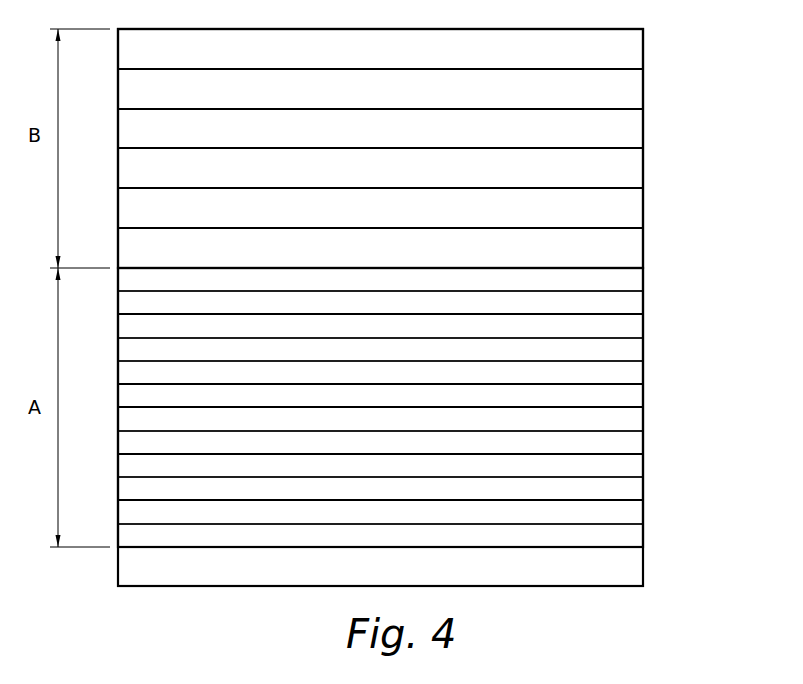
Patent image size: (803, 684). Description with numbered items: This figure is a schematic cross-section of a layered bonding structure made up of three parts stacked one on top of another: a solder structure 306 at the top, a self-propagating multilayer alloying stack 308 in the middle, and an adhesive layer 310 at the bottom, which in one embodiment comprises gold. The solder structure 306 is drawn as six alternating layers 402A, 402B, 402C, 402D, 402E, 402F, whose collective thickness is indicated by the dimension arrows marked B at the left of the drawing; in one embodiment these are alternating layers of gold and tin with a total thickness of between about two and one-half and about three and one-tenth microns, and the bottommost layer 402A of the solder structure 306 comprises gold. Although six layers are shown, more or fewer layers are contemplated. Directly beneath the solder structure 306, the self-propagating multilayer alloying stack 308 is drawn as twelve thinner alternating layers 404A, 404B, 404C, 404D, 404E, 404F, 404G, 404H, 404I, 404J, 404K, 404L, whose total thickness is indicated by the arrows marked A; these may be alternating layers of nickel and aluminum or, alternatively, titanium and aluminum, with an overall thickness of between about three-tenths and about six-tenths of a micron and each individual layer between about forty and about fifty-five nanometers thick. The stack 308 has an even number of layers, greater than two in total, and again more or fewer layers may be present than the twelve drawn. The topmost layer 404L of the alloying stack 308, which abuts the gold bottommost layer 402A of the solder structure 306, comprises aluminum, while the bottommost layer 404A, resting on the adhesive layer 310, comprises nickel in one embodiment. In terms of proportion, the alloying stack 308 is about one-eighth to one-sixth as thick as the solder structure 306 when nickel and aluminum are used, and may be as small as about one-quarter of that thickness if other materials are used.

The bottommost layer of solder structure 402A is at (633, 249).
The alternating layer of solder structure 402B is at (633, 209).
The alternating layer of solder structure 402C is at (633, 169).
The alternating layer of solder structure 402D is at (633, 129).
The alternating layer of solder structure 402E is at (633, 90).
The alternating layer of solder structure 402F is at (633, 50).
The bottommost layer of self-propagating multilayer alloying stack 404A is at (633, 537).
The alternating layer of alloying stack 404B is at (633, 514).
The alternating layer of alloying stack 404C is at (633, 490).
The alternating layer of alloying stack 404D is at (633, 467).
The alternating layer of alloying stack 404E is at (633, 444).
The alternating layer of alloying stack 404F is at (633, 421).
The alternating layer of alloying stack 404G is at (633, 397).
The alternating layer of alloying stack 404H is at (633, 374).
The alternating layer of alloying stack 404I is at (633, 351).
The alternating layer of alloying stack 404J is at (633, 328).
The alternating layer of alloying stack 404K is at (633, 305).
The topmost layer of self-propagating multilayer alloying stack 404L is at (633, 282).
The solder structure 306 is at (728, 29).
The self-propagating multilayer alloying stack 308 is at (728, 266).
The adhesive layer 310 is at (633, 568).